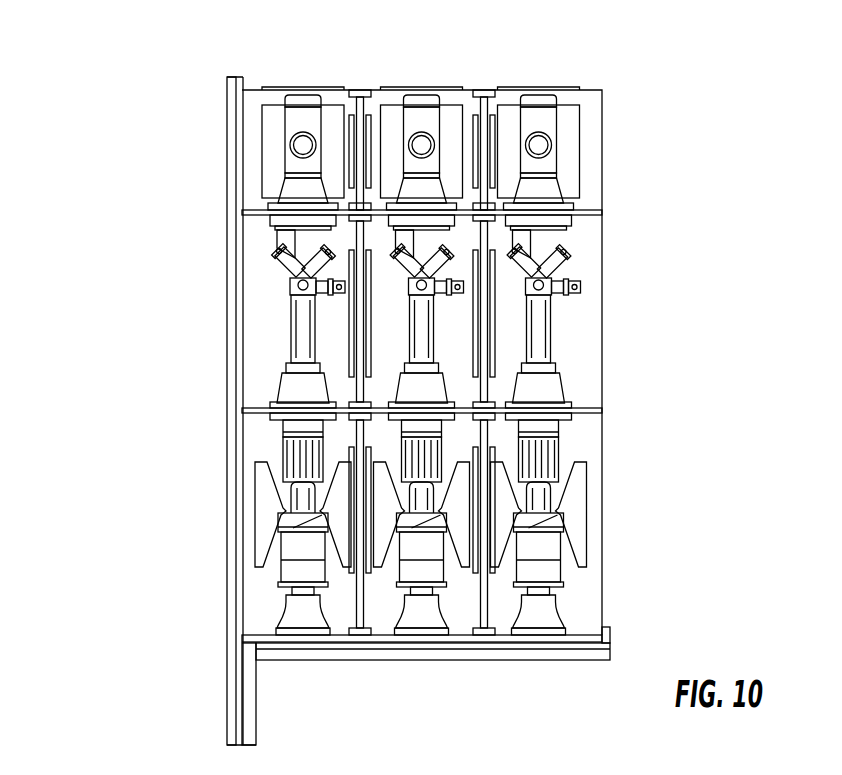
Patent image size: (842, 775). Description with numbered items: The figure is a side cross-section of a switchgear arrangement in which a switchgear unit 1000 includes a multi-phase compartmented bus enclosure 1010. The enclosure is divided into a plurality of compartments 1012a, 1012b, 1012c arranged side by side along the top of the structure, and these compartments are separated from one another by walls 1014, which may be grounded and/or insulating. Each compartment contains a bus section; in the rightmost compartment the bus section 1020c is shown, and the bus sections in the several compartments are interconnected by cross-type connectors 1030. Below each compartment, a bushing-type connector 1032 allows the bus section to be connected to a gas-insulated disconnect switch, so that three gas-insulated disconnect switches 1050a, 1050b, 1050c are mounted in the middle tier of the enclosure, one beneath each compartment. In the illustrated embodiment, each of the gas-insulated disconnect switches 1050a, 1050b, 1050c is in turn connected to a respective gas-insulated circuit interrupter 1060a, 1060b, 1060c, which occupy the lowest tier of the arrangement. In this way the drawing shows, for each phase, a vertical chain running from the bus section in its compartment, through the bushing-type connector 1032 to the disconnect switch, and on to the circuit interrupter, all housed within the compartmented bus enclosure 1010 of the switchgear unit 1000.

The switchgear unit 1000 is at (188, 620).
The multi-phase compartmented bus enclosure 1010 is at (273, 56).
The compartment 1012a is at (263, 97).
The compartment 1012b is at (462, 105).
The compartment 1012c is at (605, 134).
The wall 1014 is at (364, 120).
The bus section 1020c is at (550, 145).
The cross-type connector 1030 is at (548, 122).
The bushing-type connector 1032 is at (552, 188).
The gas-insulated disconnect switch 1050a is at (290, 312).
The gas-insulated disconnect switch 1050b is at (428, 336).
The gas-insulated disconnect switch 1050c is at (553, 320).
The gas-insulated circuit interrupter 1060a is at (283, 508).
The gas-insulated circuit interrupter 1060b is at (428, 564).
The gas-insulated circuit interrupter 1060c is at (559, 447).